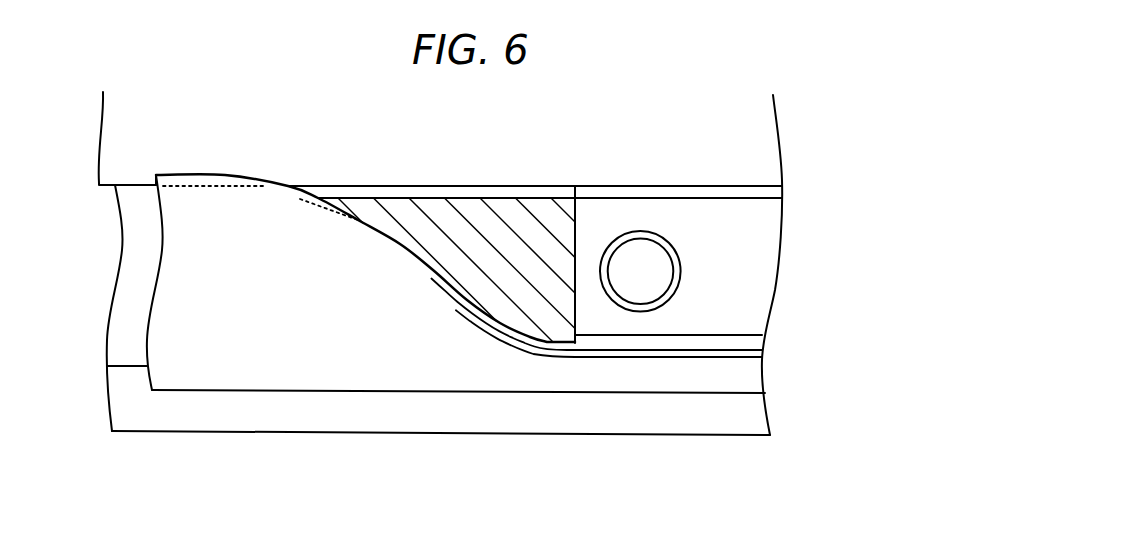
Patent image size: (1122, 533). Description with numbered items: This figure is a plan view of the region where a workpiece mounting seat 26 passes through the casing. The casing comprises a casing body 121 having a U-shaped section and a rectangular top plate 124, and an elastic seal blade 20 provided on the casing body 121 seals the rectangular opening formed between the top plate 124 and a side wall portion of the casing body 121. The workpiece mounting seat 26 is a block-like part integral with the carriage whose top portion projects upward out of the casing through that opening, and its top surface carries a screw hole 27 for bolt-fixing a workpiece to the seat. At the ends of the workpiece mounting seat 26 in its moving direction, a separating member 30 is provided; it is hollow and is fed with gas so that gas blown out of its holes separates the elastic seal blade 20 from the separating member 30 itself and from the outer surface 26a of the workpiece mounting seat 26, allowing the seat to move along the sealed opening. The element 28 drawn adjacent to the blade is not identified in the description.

The top plate 124 is at (753, 140).
The casing body 121 is at (290, 415).
The elastic seal blade 20 is at (498, 373).
The separating member 30 is at (472, 279).
The sheet member 28 is at (668, 345).
The workpiece mounting seat 26 is at (735, 292).
The outer surface 26a is at (737, 337).
The screw hole 27 is at (677, 255).